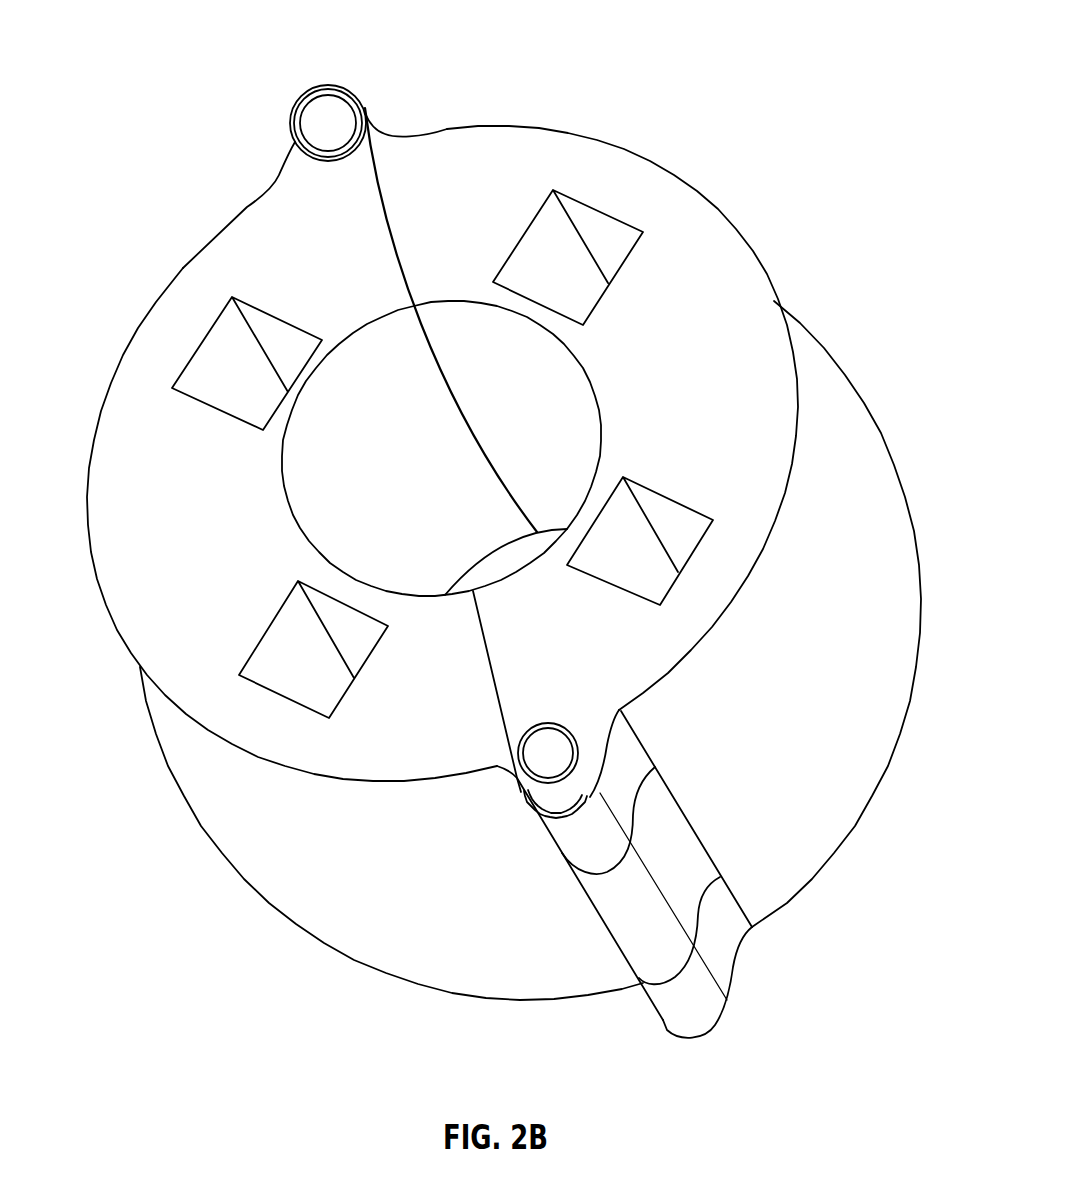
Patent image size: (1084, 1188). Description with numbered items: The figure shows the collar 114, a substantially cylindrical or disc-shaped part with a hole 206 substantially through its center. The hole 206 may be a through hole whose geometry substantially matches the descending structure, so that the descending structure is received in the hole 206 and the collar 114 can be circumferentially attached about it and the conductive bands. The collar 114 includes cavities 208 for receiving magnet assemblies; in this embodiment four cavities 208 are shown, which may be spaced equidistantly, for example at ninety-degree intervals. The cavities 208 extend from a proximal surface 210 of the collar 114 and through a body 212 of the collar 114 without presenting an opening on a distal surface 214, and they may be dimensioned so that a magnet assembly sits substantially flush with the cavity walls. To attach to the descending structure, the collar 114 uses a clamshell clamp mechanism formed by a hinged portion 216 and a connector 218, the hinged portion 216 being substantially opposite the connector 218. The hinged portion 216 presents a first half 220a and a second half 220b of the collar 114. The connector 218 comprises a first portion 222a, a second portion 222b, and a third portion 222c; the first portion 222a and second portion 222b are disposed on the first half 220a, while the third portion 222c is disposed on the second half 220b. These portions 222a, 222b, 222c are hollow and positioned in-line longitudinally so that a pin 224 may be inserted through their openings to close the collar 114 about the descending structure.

The collar 114 is at (536, 96).
The hole 206 is at (312, 482).
The cavities 208 is at (226, 364).
The proximal surface 210 is at (442, 153).
The body 212 is at (860, 487).
The distal surface 214 is at (752, 927).
The hinged portion 216 is at (320, 90).
The connector 218 is at (631, 878).
The first half 220a is at (148, 685).
The second half 220b is at (803, 330).
The first portion 222a is at (563, 838).
The second portion 222b is at (663, 1005).
The third portion 222c is at (610, 907).
The pin 224 is at (557, 747).